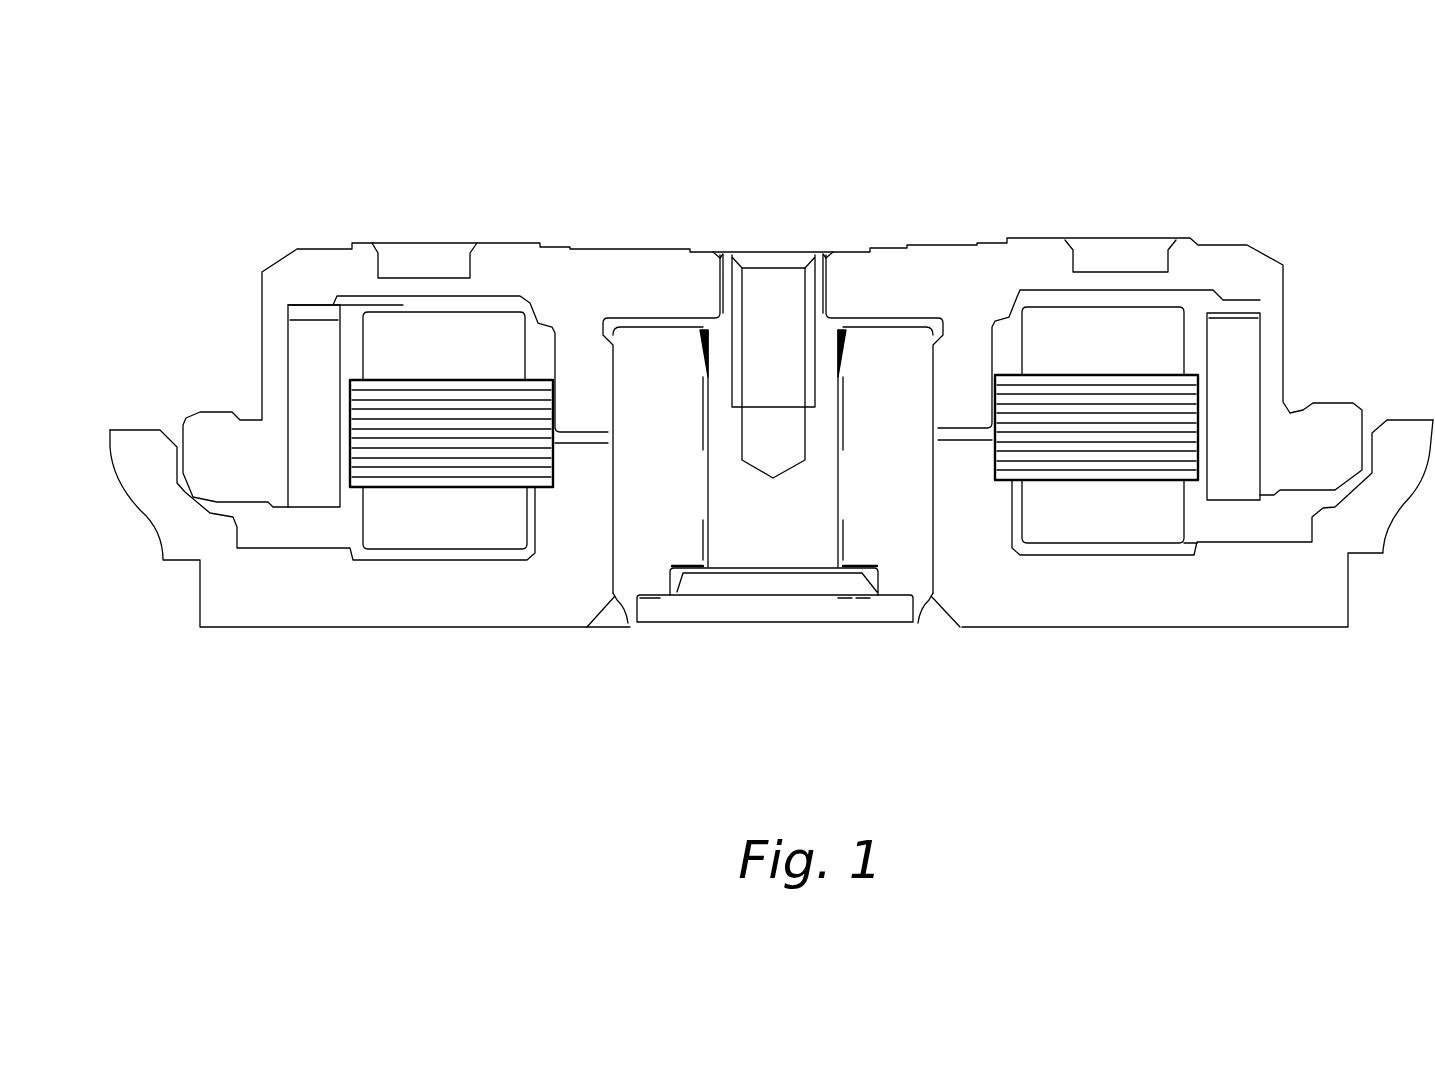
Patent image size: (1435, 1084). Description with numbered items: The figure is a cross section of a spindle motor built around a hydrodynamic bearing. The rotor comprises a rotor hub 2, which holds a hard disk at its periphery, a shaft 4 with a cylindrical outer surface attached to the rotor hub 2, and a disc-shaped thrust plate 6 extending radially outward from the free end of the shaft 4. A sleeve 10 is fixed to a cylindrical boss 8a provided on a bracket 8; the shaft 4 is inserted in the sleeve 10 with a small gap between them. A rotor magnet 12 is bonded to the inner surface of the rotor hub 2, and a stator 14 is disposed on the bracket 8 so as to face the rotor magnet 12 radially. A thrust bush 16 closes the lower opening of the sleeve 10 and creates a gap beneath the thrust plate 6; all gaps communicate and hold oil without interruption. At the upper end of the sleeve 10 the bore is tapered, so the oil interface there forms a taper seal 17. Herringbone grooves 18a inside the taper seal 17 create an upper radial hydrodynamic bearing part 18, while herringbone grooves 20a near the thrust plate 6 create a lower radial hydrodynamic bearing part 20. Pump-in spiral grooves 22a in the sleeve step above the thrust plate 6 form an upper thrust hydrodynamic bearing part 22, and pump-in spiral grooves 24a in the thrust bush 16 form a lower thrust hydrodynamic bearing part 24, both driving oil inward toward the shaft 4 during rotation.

The rotor hub 2 is at (1020, 262).
The shaft 4 is at (764, 312).
The thrust plate 6 is at (795, 583).
The bracket 8 is at (1322, 605).
The cylindrical boss 8a is at (978, 535).
The sleeve 10 is at (653, 435).
The rotor magnet 12 is at (315, 413).
The stator 14 is at (432, 470).
The thrust bush 16 is at (757, 610).
The taper seal 17 is at (703, 332).
The upper radial hydrodynamic bearing part 18 is at (705, 417).
The herringbone grooves 18a is at (842, 405).
The lower radial hydrodynamic bearing part 20 is at (705, 535).
The herringbone grooves 20a is at (842, 540).
The upper thrust hydrodynamic bearing part 22 is at (690, 568).
The spiral grooves 22a is at (863, 570).
The lower thrust hydrodynamic bearing part 24 is at (700, 598).
The spiral grooves 24a is at (853, 598).